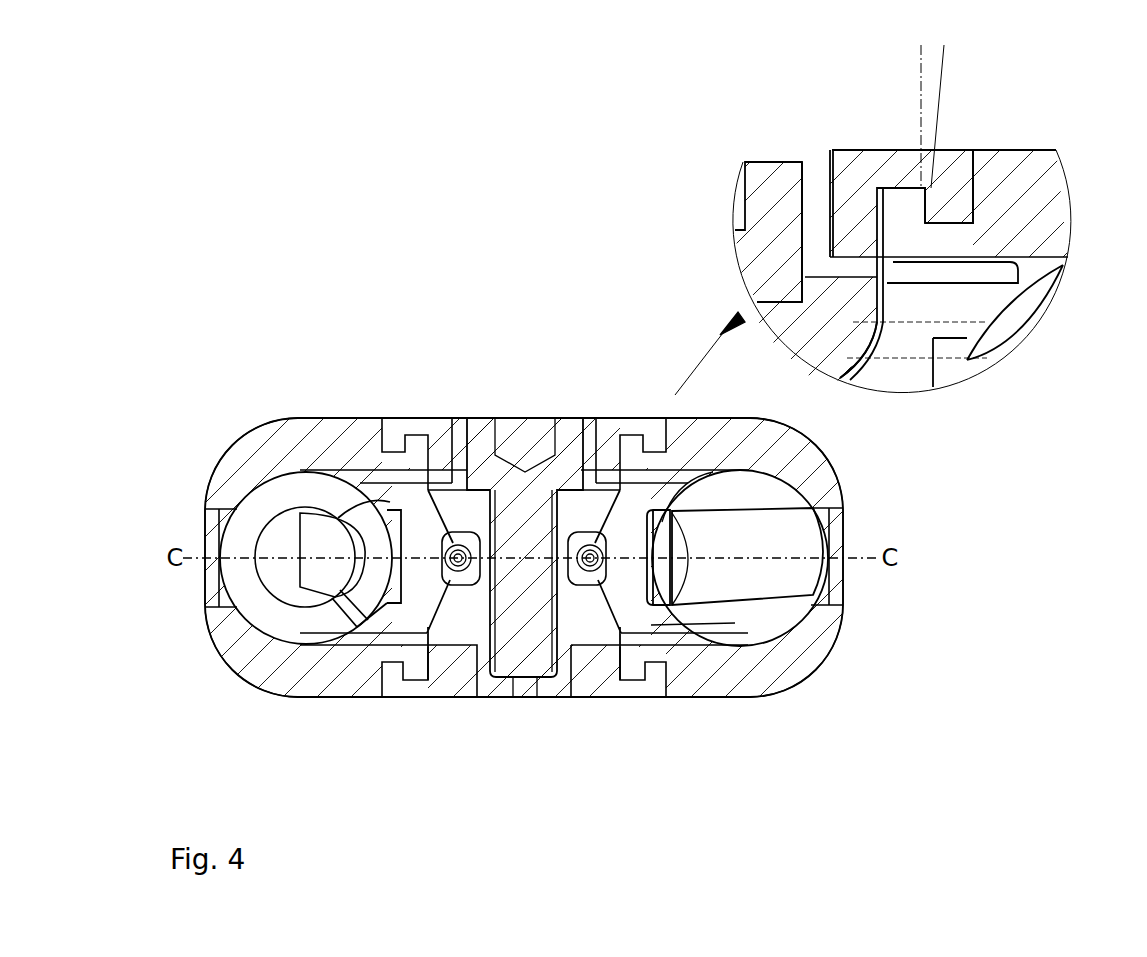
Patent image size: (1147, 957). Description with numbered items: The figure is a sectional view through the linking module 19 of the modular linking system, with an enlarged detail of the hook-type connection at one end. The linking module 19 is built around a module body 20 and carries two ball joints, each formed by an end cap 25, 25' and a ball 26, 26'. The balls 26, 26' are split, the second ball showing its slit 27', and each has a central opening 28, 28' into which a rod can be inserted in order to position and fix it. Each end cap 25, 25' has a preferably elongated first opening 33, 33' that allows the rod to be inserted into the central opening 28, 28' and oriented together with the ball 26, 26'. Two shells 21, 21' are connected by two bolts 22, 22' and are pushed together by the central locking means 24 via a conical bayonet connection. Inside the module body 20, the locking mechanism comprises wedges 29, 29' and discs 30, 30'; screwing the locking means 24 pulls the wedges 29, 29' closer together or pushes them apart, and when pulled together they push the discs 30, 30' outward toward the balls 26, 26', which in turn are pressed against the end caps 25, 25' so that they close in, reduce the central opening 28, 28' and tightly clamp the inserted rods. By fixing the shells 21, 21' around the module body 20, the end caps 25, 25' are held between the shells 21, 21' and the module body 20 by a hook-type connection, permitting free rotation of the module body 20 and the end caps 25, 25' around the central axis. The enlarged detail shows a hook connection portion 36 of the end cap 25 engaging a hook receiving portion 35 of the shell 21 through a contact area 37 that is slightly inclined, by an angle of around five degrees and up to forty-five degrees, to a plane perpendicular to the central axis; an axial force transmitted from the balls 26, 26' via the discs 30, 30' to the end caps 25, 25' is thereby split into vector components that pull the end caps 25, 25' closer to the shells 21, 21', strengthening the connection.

The linking module 19 is at (293, 378).
The module body 20 is at (608, 497).
The shell 21 is at (747, 471).
The shell 21' is at (524, 360).
The bolt 22 is at (659, 729).
The bolt 22' is at (432, 709).
The locking means 24 is at (520, 430).
The end cap 25 is at (929, 456).
The end cap 25' is at (243, 566).
The ball 26 is at (857, 516).
The ball 26' is at (306, 616).
The slit 27' is at (390, 630).
The central opening 28 is at (799, 538).
The central opening 28' is at (311, 646).
The wedge 29 is at (720, 544).
The wedge 29' is at (505, 438).
The disc 30 is at (834, 535).
The disc 30' is at (472, 442).
The first opening 33 is at (903, 564).
The first opening 33' is at (222, 501).
The hook receiving portion 35 is at (950, 185).
The hook connection portion 36 is at (907, 205).
The contact area 37 is at (933, 202).